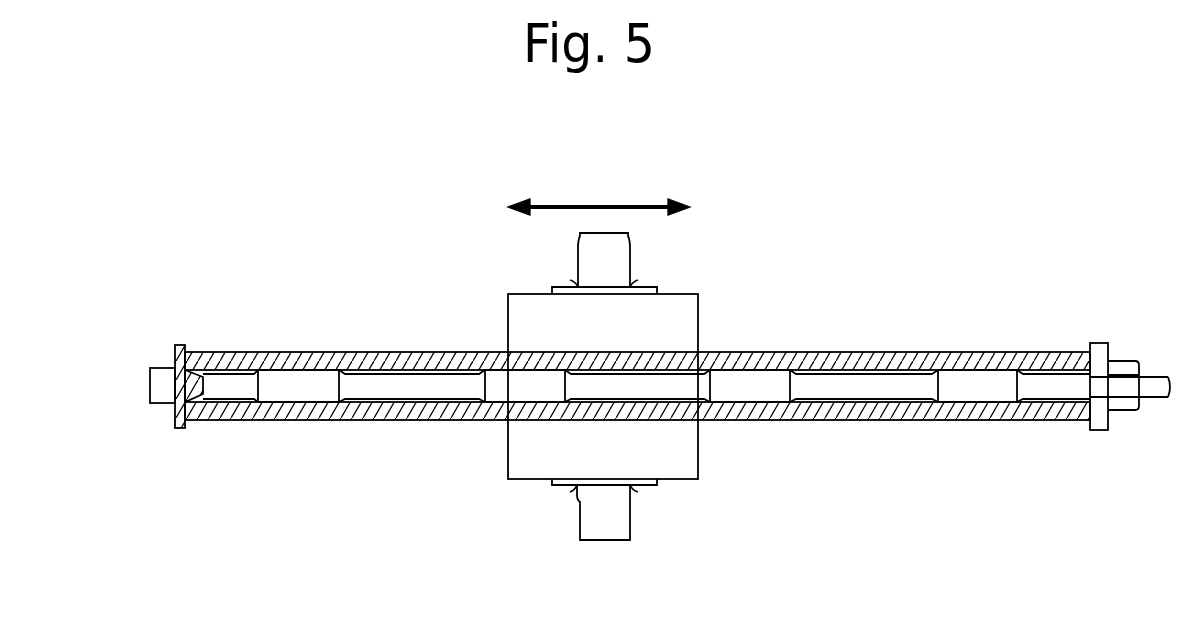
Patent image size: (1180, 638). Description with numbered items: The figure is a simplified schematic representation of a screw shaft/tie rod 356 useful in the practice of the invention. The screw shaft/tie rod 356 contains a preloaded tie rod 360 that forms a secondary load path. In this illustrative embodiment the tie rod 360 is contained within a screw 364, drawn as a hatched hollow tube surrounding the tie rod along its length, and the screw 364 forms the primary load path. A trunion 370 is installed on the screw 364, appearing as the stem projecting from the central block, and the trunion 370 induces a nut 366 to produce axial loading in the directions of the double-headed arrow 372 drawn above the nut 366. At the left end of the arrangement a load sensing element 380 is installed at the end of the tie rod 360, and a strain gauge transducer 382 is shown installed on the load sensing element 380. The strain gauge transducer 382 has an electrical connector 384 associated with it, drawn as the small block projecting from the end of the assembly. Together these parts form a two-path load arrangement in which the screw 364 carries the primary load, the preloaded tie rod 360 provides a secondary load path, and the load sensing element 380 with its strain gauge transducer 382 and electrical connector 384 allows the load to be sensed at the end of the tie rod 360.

The screw shaft/tie rod 356 is at (968, 506).
The preloaded tie rod 360 is at (867, 382).
The screw 364 is at (750, 352).
The nut 366 is at (682, 317).
The trunion 370 is at (616, 518).
The arrow 372 is at (603, 206).
The load sensing element 380 is at (177, 352).
The strain gauge transducer 382 is at (176, 408).
The electrical connector 384 is at (160, 384).